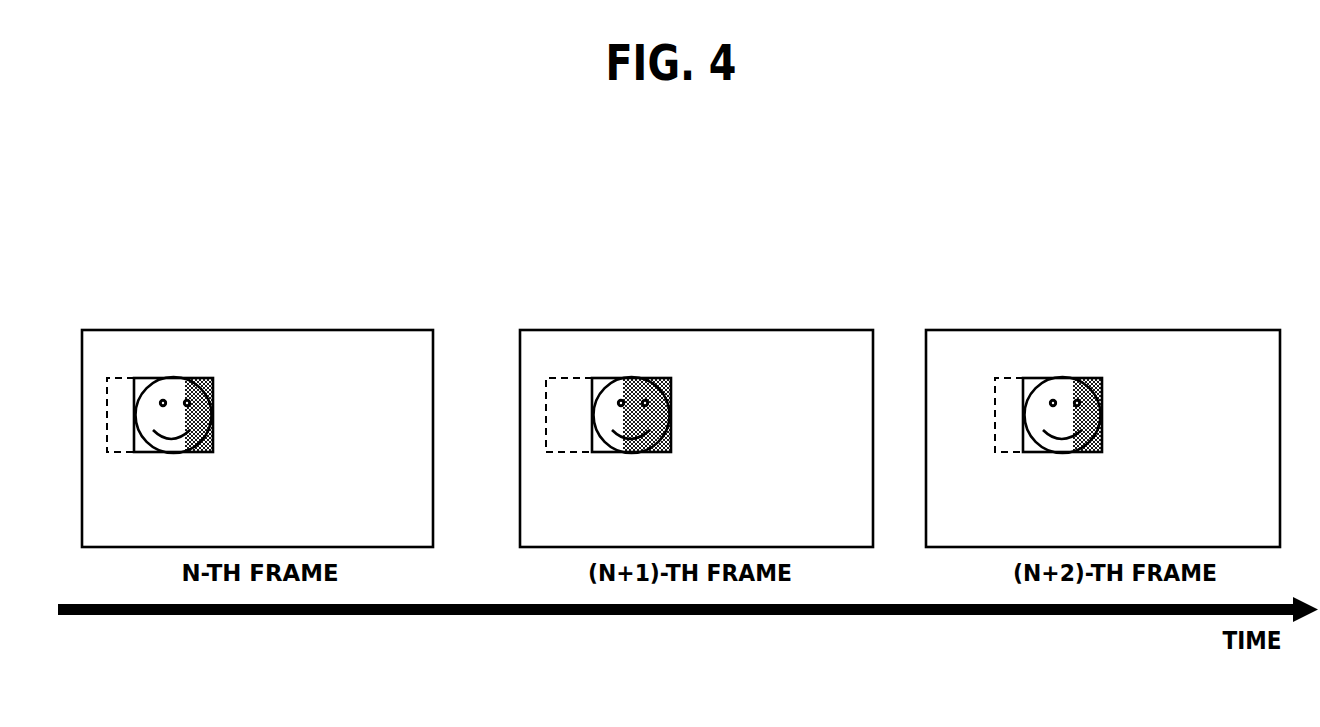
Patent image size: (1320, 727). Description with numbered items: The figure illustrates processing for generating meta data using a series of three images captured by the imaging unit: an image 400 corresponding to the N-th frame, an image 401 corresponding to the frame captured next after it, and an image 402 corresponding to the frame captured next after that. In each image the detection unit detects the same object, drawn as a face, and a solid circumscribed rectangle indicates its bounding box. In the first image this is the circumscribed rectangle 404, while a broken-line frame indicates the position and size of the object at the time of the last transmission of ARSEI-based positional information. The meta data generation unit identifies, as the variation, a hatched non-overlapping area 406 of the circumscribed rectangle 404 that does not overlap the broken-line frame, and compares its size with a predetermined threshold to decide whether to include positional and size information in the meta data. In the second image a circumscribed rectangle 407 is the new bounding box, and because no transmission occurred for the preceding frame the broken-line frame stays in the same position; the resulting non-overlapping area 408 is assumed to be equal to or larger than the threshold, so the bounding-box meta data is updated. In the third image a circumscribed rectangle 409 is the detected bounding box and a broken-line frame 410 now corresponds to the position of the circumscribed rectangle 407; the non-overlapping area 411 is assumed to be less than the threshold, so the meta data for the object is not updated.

The image 400 is at (267, 330).
The image 401 is at (707, 330).
The image 402 is at (1140, 330).
The circumscribed rectangle 404 is at (152, 377).
The non-overlapping area 406 is at (215, 388).
The circumscribed rectangle 407 is at (608, 377).
The non-overlapping area 408 is at (673, 388).
The circumscribed rectangle 409 is at (1053, 377).
The broken-line frame 410 is at (997, 377).
The non-overlapping area 411 is at (1103, 402).